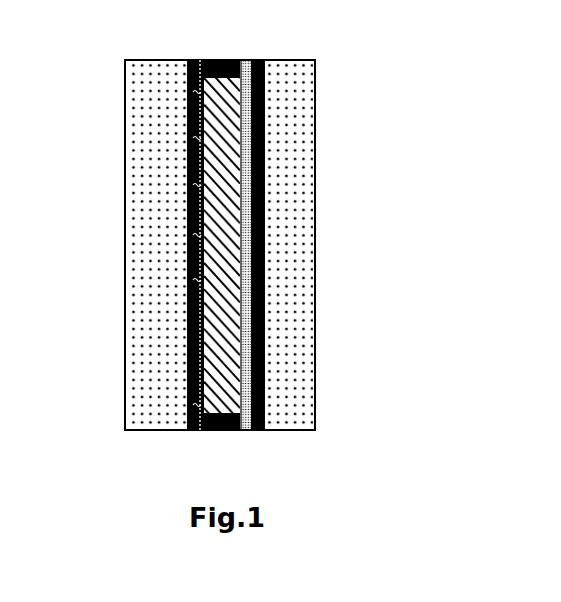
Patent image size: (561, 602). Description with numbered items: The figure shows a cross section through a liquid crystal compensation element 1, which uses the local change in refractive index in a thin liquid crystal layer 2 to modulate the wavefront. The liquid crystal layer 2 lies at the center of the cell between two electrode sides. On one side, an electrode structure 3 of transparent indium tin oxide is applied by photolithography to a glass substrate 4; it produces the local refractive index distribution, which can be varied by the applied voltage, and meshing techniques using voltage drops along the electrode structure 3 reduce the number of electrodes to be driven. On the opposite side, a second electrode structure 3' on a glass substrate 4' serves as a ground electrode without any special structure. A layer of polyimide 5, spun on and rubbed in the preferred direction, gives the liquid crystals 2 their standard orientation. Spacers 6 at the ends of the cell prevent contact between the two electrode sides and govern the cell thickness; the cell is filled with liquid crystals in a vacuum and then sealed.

The liquid crystal compensation element 1 is at (315, 133).
The liquid crystal layer 2 is at (232, 313).
The electrode structure 3 is at (130, 245).
The electrode structure 3' is at (316, 245).
The glass substrate 4 is at (121, 245).
The glass substrate 4' is at (335, 245).
The layer of polyimide 5 is at (200, 207).
The spacers 6 is at (217, 62).